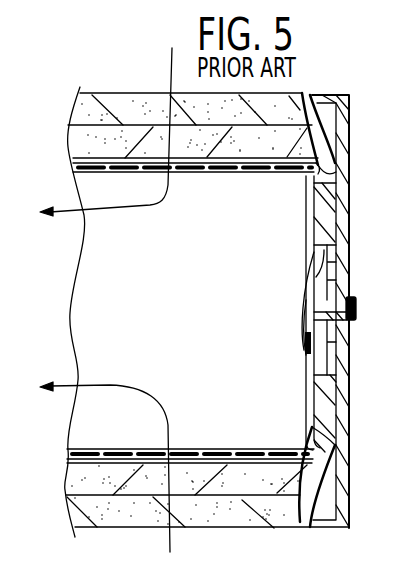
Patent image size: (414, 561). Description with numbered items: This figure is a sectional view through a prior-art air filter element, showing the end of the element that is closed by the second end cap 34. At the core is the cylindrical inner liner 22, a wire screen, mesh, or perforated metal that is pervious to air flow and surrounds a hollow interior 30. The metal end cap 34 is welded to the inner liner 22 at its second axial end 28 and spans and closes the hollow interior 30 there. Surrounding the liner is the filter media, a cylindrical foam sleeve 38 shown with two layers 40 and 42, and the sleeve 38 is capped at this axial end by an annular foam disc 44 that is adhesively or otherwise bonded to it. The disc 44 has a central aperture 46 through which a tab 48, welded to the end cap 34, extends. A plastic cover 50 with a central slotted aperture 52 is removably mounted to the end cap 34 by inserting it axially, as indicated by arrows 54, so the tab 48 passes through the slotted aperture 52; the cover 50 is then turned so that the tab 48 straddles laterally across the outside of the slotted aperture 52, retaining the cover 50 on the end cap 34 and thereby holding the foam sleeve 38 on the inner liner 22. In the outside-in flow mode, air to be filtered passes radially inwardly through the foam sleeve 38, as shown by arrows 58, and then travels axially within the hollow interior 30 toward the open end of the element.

The inner liner 22 is at (196, 175).
The second axial end 28 is at (316, 170).
The hollow interior 30 is at (175, 326).
The second end cap 34 is at (306, 245).
The foam sleeve 38 is at (135, 93).
The first layer 40 is at (88, 110).
The second layer 42 is at (84, 143).
The annular foam disc 44 is at (304, 96).
The central aperture 46 is at (316, 277).
The tab 48 is at (355, 300).
The cover 50 is at (7, 320).
The slotted aperture 52 is at (324, 310).
The arrows 54 is at (0, 302).
The arrows 58 is at (152, 205).